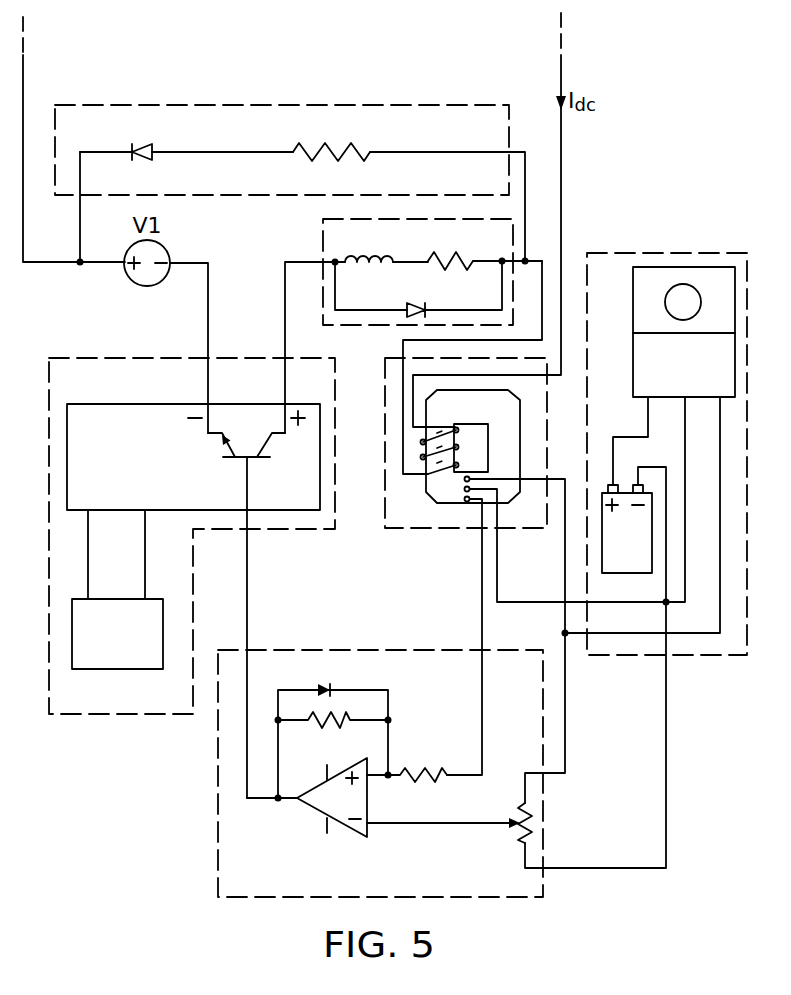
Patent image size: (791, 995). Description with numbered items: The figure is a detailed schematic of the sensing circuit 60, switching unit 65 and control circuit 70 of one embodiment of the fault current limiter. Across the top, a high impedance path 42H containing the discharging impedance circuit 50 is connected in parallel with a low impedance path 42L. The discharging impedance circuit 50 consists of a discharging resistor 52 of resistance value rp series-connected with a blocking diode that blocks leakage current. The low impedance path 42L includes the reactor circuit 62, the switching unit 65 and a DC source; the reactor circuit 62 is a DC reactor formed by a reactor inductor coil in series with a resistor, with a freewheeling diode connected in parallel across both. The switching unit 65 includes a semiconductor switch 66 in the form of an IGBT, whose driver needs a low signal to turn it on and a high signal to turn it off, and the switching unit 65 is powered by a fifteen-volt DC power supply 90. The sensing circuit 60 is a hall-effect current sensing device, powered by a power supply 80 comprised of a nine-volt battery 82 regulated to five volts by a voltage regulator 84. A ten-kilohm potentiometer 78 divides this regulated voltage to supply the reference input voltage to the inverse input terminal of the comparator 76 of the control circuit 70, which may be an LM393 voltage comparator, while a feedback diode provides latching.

The discharging impedance circuit 50 is at (282, 159).
The discharging resistor 52 is at (343, 158).
The high impedance path 42H is at (525, 200).
The low impedance path 42L is at (542, 282).
The reactor circuit 62 is at (322, 230).
The sensing circuit 60 is at (384, 372).
The switching unit 65 is at (192, 551).
The semiconductor switch 66 is at (244, 450).
The power supply 90 is at (97, 669).
The control circuit 70 is at (381, 773).
The comparator 76 is at (347, 829).
The potentiometer 78 is at (530, 828).
The power supply 80 is at (667, 423).
The battery 82 is at (614, 560).
The voltage regulator 84 is at (632, 367).